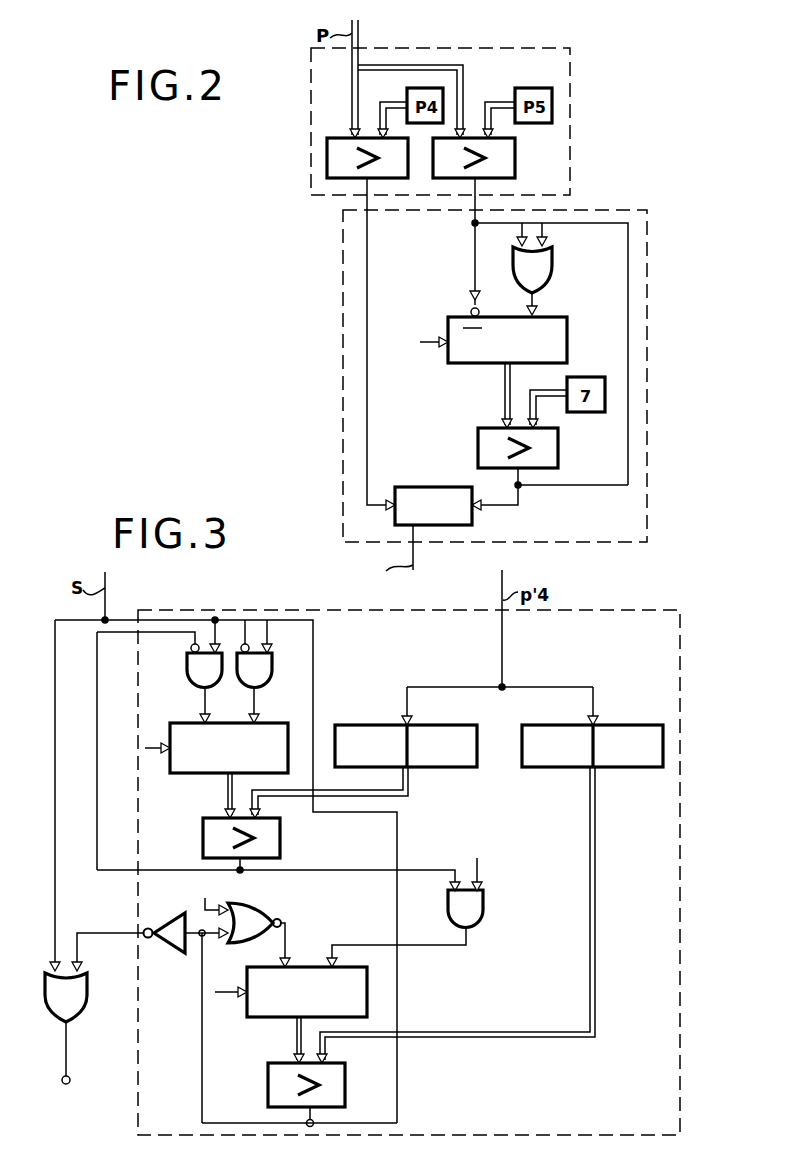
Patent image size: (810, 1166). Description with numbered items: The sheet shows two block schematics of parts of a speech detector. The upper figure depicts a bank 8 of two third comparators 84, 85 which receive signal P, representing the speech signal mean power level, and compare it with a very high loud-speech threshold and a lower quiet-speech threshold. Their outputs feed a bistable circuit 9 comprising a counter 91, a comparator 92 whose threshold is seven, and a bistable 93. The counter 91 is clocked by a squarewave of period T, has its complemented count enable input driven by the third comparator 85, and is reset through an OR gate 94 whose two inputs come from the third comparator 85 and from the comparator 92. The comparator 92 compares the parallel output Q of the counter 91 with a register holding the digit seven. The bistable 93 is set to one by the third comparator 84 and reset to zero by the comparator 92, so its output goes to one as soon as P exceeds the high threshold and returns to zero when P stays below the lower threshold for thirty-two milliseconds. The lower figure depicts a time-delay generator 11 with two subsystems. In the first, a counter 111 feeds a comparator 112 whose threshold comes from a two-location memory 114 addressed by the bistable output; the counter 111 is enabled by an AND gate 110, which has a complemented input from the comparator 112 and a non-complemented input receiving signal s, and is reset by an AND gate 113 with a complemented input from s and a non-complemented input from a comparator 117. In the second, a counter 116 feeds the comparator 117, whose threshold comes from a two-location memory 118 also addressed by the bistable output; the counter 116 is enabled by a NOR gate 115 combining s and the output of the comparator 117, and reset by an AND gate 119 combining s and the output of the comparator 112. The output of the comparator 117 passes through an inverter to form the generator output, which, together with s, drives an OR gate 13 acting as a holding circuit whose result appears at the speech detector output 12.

In FIG. 2, the bank of third comparators 8 is at (599, 141).
In FIG. 2, the bistable circuit 9 is at (611, 210).
In FIG. 2, the third comparator 84 is at (340, 147).
In FIG. 2, the third comparator 85 is at (505, 163).
In FIG. 2, the counter 91 is at (457, 325).
In FIG. 2, the comparator 92 is at (487, 453).
In FIG. 2, the bistable 93 is at (464, 497).
In FIG. 2, the OR gate 94 is at (535, 265).
In FIG. 3, the time-delay generator 11 is at (677, 903).
In FIG. 3, the output of the speech detector 12 is at (65, 1055).
In FIG. 3, the OR gate 13 is at (62, 1003).
In FIG. 3, the AND gate 110 is at (197, 677).
In FIG. 3, the counter 111 is at (186, 733).
In FIG. 3, the comparator 112 is at (213, 835).
In FIG. 3, the AND gate 113 is at (255, 673).
In FIG. 3, the two-location memory 114 is at (378, 733).
In FIG. 3, the NOR gate 115 is at (253, 918).
In FIG. 3, the counter 116 is at (278, 1002).
In FIG. 3, the comparator 117 is at (280, 1088).
In FIG. 3, the two-location memory 118 is at (620, 733).
In FIG. 3, the AND gate 119 is at (473, 912).